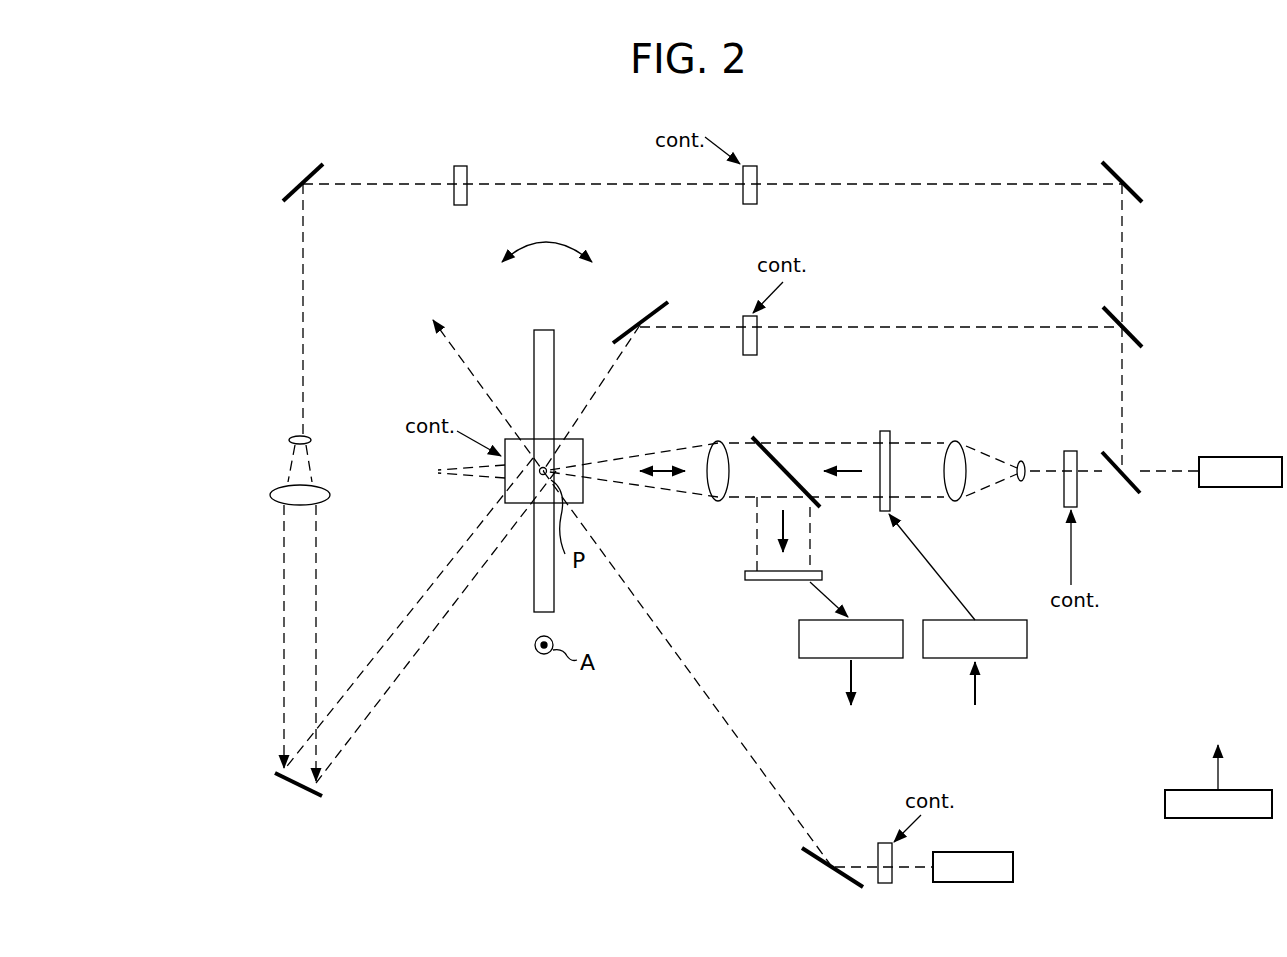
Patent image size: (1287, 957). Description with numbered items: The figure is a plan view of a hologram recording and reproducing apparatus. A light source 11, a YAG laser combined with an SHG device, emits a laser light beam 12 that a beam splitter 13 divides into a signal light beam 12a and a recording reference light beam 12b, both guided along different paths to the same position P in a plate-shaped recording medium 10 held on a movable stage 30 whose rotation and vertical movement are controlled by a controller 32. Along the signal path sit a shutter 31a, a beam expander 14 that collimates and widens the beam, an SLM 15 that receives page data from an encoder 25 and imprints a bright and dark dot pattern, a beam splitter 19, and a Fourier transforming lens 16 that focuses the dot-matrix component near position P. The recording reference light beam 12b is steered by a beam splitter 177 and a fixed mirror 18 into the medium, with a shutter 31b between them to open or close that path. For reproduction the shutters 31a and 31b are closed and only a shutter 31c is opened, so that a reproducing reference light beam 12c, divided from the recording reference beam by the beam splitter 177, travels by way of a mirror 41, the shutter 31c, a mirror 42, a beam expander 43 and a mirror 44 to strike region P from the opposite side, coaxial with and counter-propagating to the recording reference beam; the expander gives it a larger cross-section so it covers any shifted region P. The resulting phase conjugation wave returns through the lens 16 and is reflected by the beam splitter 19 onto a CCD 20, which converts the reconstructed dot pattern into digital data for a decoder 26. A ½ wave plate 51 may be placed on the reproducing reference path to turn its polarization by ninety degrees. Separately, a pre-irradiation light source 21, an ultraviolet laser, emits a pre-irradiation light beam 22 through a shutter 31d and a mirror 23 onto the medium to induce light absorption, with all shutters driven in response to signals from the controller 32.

The recording medium 10 is at (546, 330).
The light source 11 is at (1245, 487).
The laser light beam 12 is at (1175, 471).
The signal light beam 12a is at (1107, 471).
The recording reference light beam 12b is at (960, 327).
The reproducing reference light beam 12c is at (927, 184).
The beam splitter 13 is at (1125, 485).
The beam expander 14 is at (985, 505).
The SLM 15 is at (884, 431).
The Fourier transforming lens 16 is at (718, 442).
The beam splitter 177 is at (1130, 334).
The fixed mirror 18 is at (651, 305).
The beam splitter 19 is at (791, 458).
The CCD 20 is at (745, 576).
The pre-irradiation light source 21 is at (1013, 866).
The pre-irradiation light beam 22 is at (920, 867).
The mirror 23 is at (815, 858).
The encoder 25 is at (1000, 620).
The decoder 26 is at (799, 641).
The movable stage 30 is at (583, 497).
The shutter 31a is at (1072, 451).
The shutter 31b is at (757, 345).
The shutter 31c is at (783, 162).
The shutter 31d is at (878, 858).
The controller 32 is at (1245, 818).
The mirror 41 is at (1114, 178).
The mirror 42 is at (300, 183).
The beam expander 43 is at (292, 475).
The mirror 44 is at (295, 786).
The ½ wave plate 51 is at (460, 166).